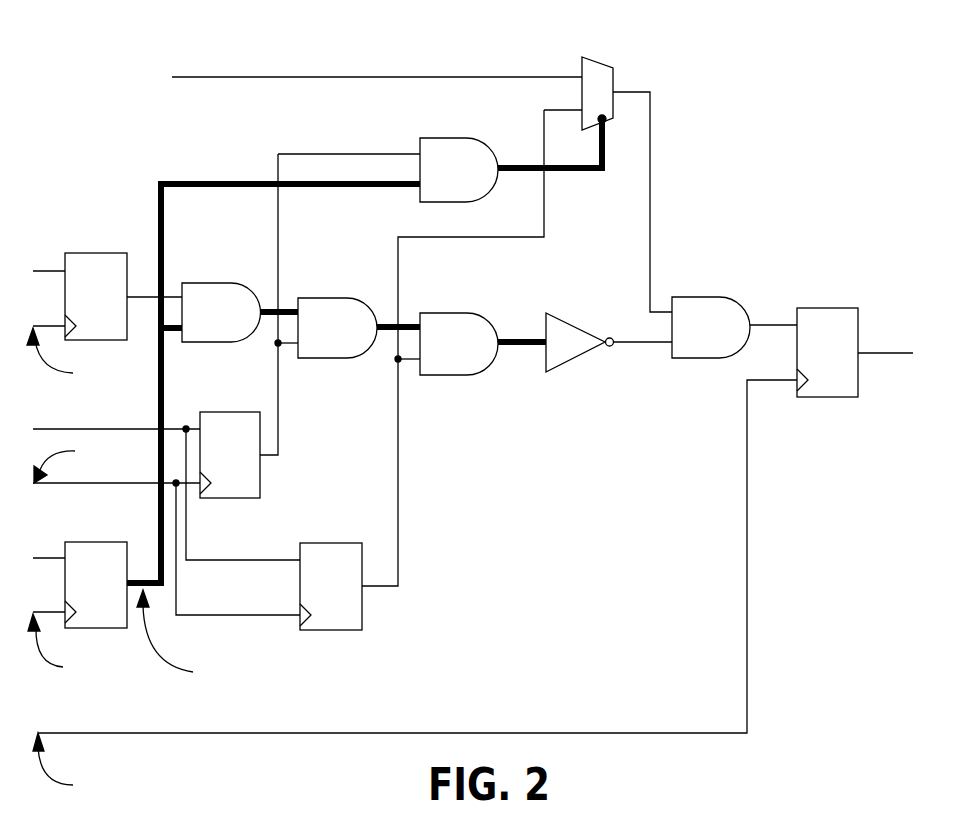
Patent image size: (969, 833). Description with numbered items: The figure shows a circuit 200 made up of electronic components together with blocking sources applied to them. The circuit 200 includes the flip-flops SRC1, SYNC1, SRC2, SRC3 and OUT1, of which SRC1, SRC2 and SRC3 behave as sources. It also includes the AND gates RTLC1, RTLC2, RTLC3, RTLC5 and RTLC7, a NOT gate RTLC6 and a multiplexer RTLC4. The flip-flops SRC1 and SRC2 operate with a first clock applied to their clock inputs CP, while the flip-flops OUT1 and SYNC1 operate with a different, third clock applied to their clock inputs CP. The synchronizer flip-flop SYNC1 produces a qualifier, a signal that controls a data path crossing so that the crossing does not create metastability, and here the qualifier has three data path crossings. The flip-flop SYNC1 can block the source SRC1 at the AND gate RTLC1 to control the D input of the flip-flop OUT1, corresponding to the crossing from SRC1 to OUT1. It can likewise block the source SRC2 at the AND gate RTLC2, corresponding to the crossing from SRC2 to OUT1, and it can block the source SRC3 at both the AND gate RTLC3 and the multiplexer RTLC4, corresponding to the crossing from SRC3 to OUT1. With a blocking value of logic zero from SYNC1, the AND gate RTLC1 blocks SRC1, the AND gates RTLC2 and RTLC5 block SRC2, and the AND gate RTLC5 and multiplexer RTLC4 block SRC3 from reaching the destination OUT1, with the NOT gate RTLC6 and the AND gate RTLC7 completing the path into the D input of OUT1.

The circuit 200 is at (760, 102).
The flip-flop SRC1 is at (96, 285).
The flip-flop SRC2 is at (230, 443).
The flip-flop SRC3 is at (331, 575).
The flip-flop SYNC1 is at (92, 573).
The flip-flop OUT1 is at (827, 341).
The AND gate RTLC1 is at (219, 302).
The AND gate RTLC2 is at (336, 318).
The AND gate RTLC3 is at (456, 158).
The multiplexer RTLC4 is at (594, 90).
The AND gate RTLC5 is at (458, 333).
The NOT gate RTLC6 is at (569, 331).
The AND gate RTLC7 is at (707, 317).